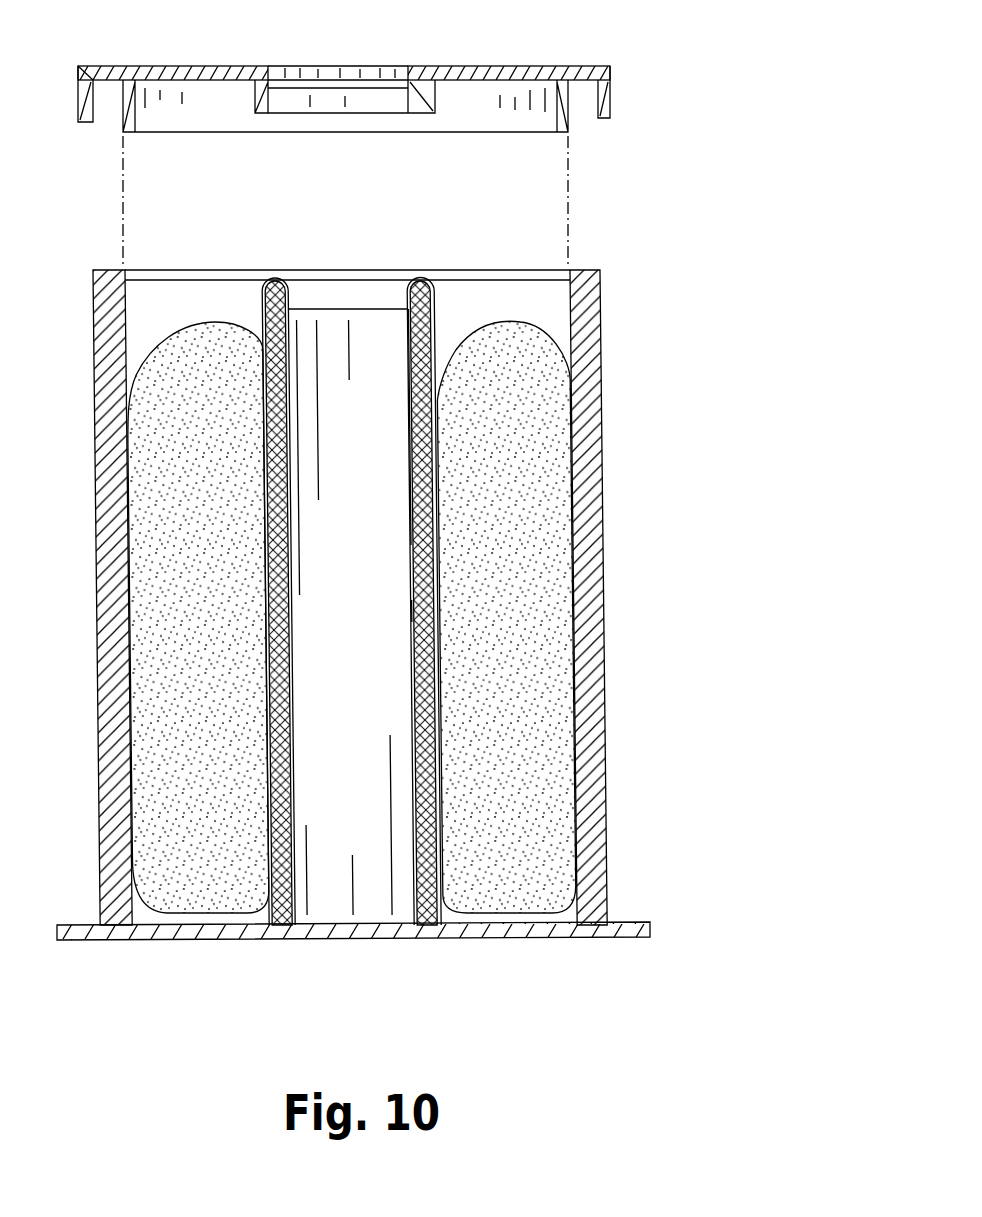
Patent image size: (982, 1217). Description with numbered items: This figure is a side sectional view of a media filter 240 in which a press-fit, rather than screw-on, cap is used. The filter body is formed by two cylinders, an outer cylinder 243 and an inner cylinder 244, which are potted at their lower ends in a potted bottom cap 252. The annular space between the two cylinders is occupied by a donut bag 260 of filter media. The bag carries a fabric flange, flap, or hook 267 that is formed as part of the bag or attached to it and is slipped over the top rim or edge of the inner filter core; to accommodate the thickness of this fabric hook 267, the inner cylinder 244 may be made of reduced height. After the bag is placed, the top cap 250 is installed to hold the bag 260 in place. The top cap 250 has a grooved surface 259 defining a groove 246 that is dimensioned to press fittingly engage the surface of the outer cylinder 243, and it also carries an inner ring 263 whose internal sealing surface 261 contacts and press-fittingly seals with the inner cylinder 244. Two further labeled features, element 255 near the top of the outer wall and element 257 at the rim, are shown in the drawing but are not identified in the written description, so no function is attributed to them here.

The filter cartridge assembly 240 is at (391, 594).
The outer cylinder 243 is at (600, 413).
The inner cylinder 244 is at (343, 564).
The groove 246 is at (106, 100).
The top cap 250 is at (360, 136).
The potted bottom cap 252 is at (637, 928).
The container 255 is at (387, 571).
The container rim 257 is at (540, 241).
The grooved surface 259 is at (572, 118).
The bag 260 is at (541, 335).
The internal sealing surface 261 is at (422, 108).
The inner ring 263 is at (268, 84).
The fabric hook 267 is at (275, 572).